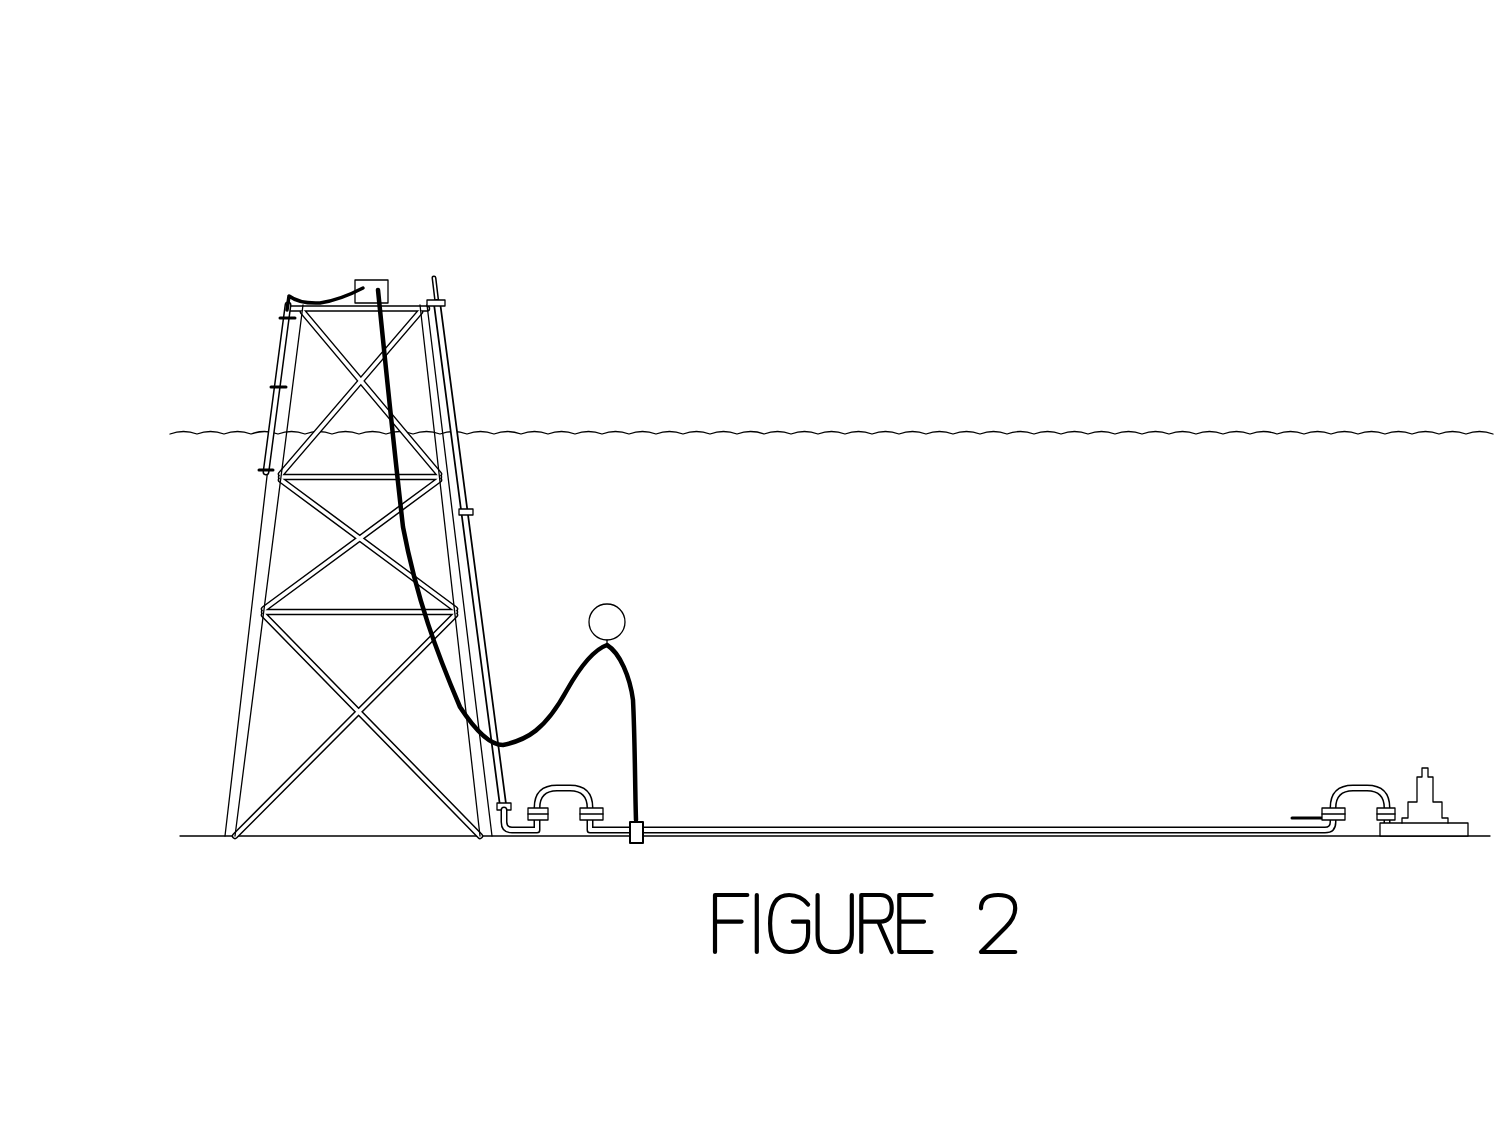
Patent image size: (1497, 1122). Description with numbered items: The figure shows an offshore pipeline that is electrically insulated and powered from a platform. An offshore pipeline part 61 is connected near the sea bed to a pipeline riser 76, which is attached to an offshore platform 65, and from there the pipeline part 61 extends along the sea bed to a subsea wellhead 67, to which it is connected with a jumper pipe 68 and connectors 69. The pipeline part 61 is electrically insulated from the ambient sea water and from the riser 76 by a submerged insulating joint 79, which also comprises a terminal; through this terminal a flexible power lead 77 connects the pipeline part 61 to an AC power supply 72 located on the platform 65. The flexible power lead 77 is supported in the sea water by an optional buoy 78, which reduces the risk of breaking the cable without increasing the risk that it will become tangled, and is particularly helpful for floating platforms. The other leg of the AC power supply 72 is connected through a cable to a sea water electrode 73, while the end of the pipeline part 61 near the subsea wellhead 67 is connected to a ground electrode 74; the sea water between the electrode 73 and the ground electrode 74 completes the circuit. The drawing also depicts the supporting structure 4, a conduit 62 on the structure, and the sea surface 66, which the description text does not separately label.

The platform jacket 4 is at (313, 833).
The pipeline part 61 is at (337, 297).
The riser conduit 62 is at (443, 343).
The platform 65 is at (503, 662).
The sea surface 66 is at (1340, 433).
The subsea wellhead 67 is at (1405, 755).
The jumper pipe 68 is at (1360, 788).
The connectors 69 is at (1326, 808).
The AC power supply 72 is at (370, 287).
The sea water electrode 73 is at (282, 347).
The ground electrode 74 is at (1300, 818).
The pipeline riser 76 is at (462, 463).
The flexible power lead 77 is at (631, 670).
The buoy 78 is at (606, 612).
The submerged insulating joint 79 is at (640, 822).